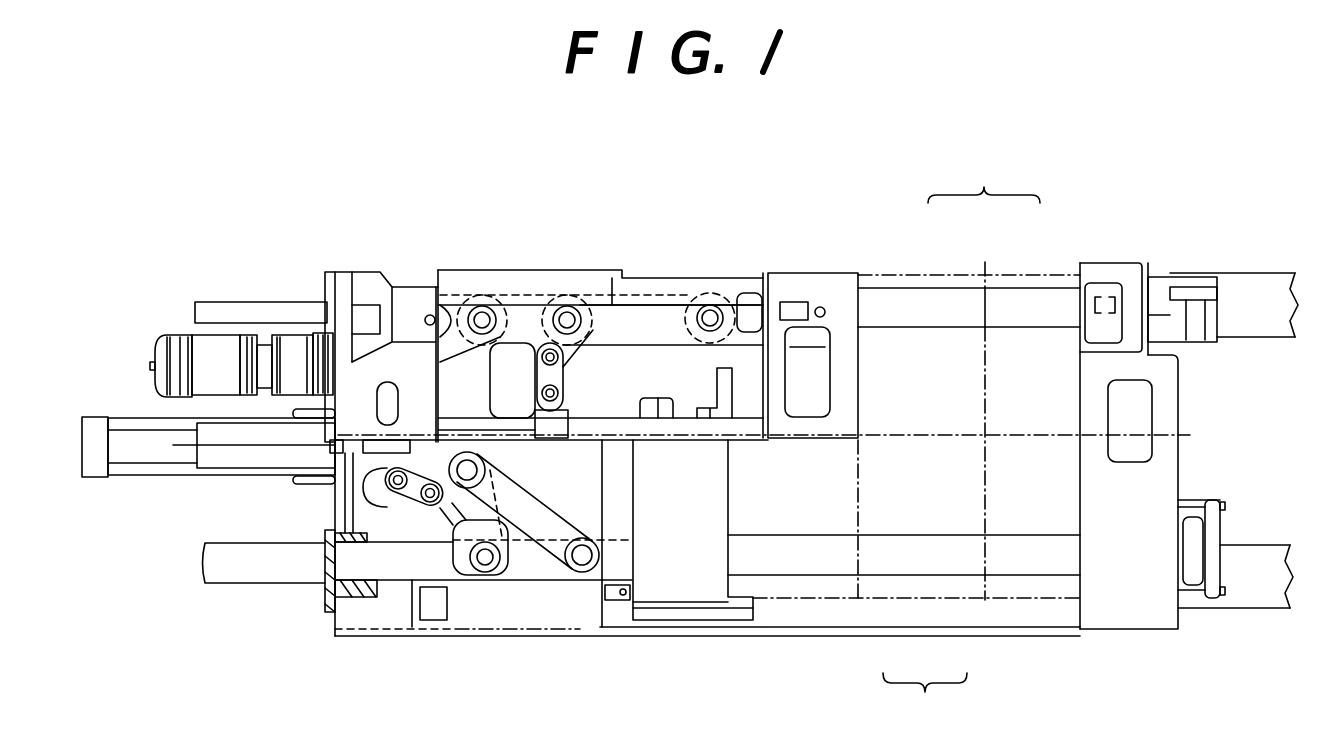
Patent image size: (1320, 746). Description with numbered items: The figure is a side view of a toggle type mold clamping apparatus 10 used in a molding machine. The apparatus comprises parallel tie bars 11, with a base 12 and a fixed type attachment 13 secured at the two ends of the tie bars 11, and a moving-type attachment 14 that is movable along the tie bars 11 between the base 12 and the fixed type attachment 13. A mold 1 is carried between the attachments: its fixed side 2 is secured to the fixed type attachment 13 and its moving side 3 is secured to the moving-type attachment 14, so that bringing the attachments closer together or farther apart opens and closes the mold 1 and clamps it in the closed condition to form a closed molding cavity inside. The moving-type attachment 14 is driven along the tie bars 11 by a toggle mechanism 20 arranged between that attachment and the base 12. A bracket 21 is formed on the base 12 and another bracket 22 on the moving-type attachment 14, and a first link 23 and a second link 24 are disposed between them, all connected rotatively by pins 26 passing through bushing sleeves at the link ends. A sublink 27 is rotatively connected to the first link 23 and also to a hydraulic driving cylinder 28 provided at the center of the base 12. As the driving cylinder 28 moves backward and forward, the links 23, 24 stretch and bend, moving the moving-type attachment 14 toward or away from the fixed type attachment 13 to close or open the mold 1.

The mold 1 is at (961, 436).
The fixed side 2 is at (1022, 280).
The moving side 3 is at (950, 280).
The toggle type mold clamping apparatus 10 is at (1104, 204).
The tie bars 11 is at (883, 300).
The base 12 is at (417, 345).
The fixed type attachment 13 is at (1165, 447).
The moving-type attachment 14 is at (845, 347).
The toggle mechanism 20 is at (540, 645).
The bracket 21 is at (457, 345).
The bracket 22 is at (743, 337).
The first link 23 is at (520, 333).
The second link 24 is at (642, 333).
The pins 26 is at (481, 304).
The sublink 27 is at (563, 375).
The hydraulic driving cylinder 28 is at (168, 472).